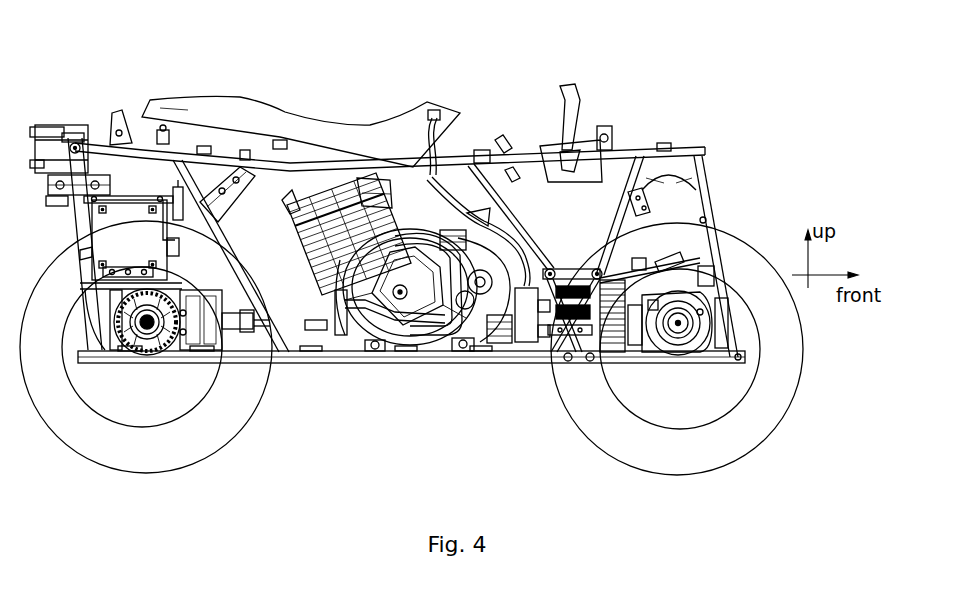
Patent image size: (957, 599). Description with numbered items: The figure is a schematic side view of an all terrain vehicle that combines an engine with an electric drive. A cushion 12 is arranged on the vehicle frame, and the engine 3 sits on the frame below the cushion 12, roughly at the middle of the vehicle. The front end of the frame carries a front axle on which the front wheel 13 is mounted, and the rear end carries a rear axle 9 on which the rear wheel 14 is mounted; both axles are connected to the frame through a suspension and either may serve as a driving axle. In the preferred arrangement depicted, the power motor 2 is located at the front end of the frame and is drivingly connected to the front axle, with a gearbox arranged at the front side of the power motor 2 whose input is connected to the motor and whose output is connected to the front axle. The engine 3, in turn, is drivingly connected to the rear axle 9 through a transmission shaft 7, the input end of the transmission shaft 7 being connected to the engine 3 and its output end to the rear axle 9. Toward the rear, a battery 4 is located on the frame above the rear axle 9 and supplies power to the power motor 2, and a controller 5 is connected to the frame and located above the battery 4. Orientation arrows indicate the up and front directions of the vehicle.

The power motor 2 is at (591, 366).
The engine 3 is at (406, 309).
The battery 4 is at (188, 165).
The controller 5 is at (106, 108).
The transmission shaft 7 is at (320, 381).
The rear axle 9 is at (176, 377).
The cushion 12 is at (302, 98).
The front wheel 13 is at (720, 349).
The rear wheel 14 is at (146, 361).